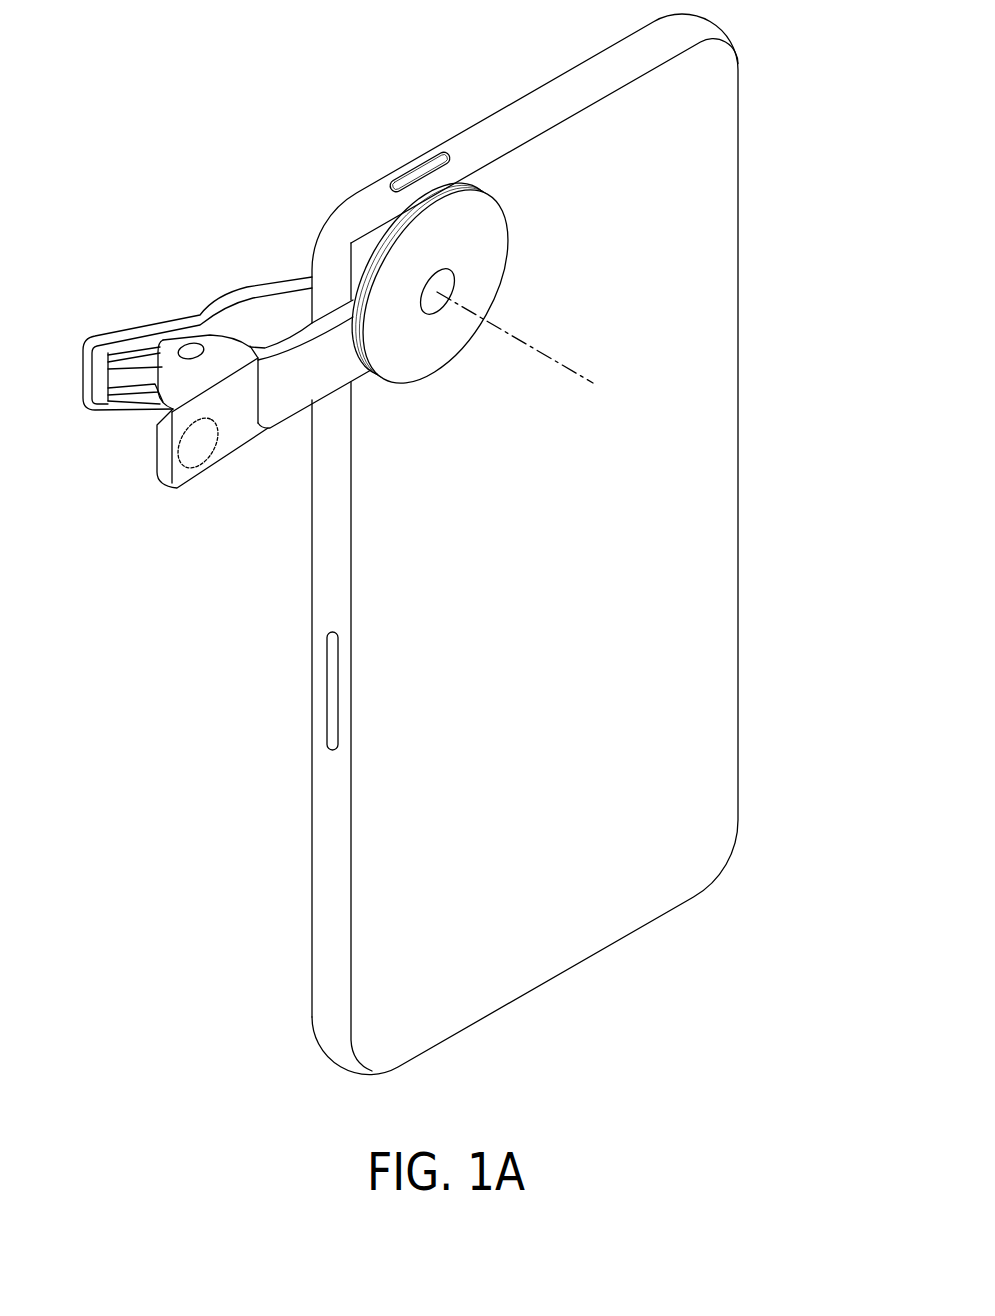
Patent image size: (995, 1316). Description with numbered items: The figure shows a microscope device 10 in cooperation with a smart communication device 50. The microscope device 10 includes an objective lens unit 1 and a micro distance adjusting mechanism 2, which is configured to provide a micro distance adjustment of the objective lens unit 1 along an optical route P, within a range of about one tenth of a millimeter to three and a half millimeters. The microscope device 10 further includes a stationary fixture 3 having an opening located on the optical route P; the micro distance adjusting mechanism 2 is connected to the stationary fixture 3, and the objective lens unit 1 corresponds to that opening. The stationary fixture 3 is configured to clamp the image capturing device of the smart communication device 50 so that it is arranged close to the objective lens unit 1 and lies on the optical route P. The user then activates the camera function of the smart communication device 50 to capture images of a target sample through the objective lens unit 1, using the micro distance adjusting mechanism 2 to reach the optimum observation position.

The smart communication device 50 is at (531, 70).
The microscope device 10 is at (318, 133).
The objective lens unit 1 is at (434, 296).
The micro distance adjusting mechanism 2 is at (423, 242).
The stationary fixture 3 is at (241, 280).
The optical route P is at (524, 344).